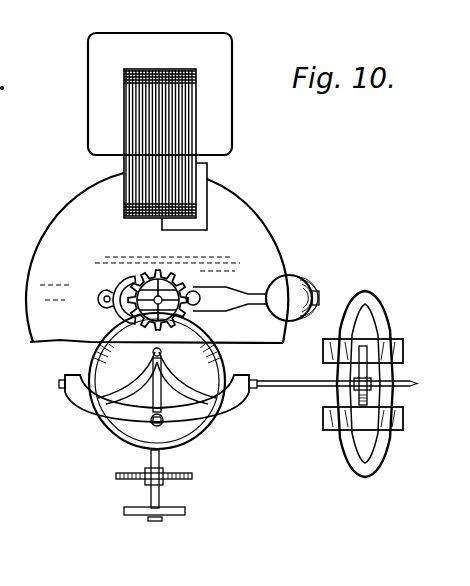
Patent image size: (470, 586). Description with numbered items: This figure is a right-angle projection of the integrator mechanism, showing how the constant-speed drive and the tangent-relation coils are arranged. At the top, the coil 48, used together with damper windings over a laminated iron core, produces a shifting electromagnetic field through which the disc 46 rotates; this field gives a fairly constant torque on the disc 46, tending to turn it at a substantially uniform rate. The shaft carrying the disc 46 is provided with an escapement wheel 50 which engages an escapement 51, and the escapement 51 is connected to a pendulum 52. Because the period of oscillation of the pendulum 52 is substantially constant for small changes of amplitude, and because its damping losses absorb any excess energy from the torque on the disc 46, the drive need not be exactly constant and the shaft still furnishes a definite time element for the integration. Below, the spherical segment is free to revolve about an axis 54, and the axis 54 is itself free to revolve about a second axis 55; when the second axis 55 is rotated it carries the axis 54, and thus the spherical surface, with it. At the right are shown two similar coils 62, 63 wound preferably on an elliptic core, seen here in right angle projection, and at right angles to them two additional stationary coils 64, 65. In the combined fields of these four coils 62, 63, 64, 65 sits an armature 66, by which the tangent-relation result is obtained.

The coil 48 is at (232, 58).
The disc 46 is at (262, 240).
The escapement wheel 50 is at (160, 271).
The escapement 51 is at (116, 284).
The pendulum 52 is at (302, 284).
The axis 54 is at (152, 422).
The second axis 55 is at (60, 384).
The coil 62 is at (366, 299).
The coil 63 is at (381, 317).
The stationary coil 64 is at (403, 349).
The stationary coil 65 is at (403, 411).
The armature 66 is at (369, 372).